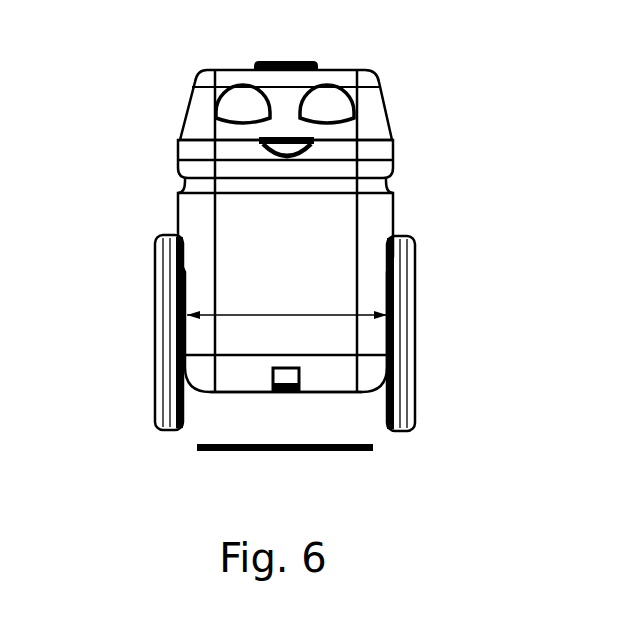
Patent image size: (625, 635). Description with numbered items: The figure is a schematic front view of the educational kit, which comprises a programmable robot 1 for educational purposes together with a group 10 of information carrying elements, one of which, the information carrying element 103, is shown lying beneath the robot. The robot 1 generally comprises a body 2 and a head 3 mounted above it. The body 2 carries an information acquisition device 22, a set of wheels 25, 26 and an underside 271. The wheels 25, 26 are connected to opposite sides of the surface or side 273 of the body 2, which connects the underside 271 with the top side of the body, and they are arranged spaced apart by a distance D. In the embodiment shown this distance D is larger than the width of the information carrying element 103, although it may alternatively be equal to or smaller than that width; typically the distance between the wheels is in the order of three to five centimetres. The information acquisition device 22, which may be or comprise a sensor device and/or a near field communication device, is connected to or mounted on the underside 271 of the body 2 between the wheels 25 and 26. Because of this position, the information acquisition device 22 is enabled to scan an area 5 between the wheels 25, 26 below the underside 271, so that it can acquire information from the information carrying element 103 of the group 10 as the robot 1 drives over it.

The programmable robot 1 is at (140, 88).
The body 2 is at (395, 203).
The head 3 is at (385, 112).
The information acquisition device 22 is at (285, 377).
The wheel 25 is at (157, 320).
The wheel 26 is at (415, 330).
The underside 271 is at (320, 392).
The side 273 is at (232, 248).
The information carrying element 103 is at (260, 450).
The group of information carrying elements 10 is at (403, 474).
The distance D is at (260, 315).
The area 5 is at (297, 432).